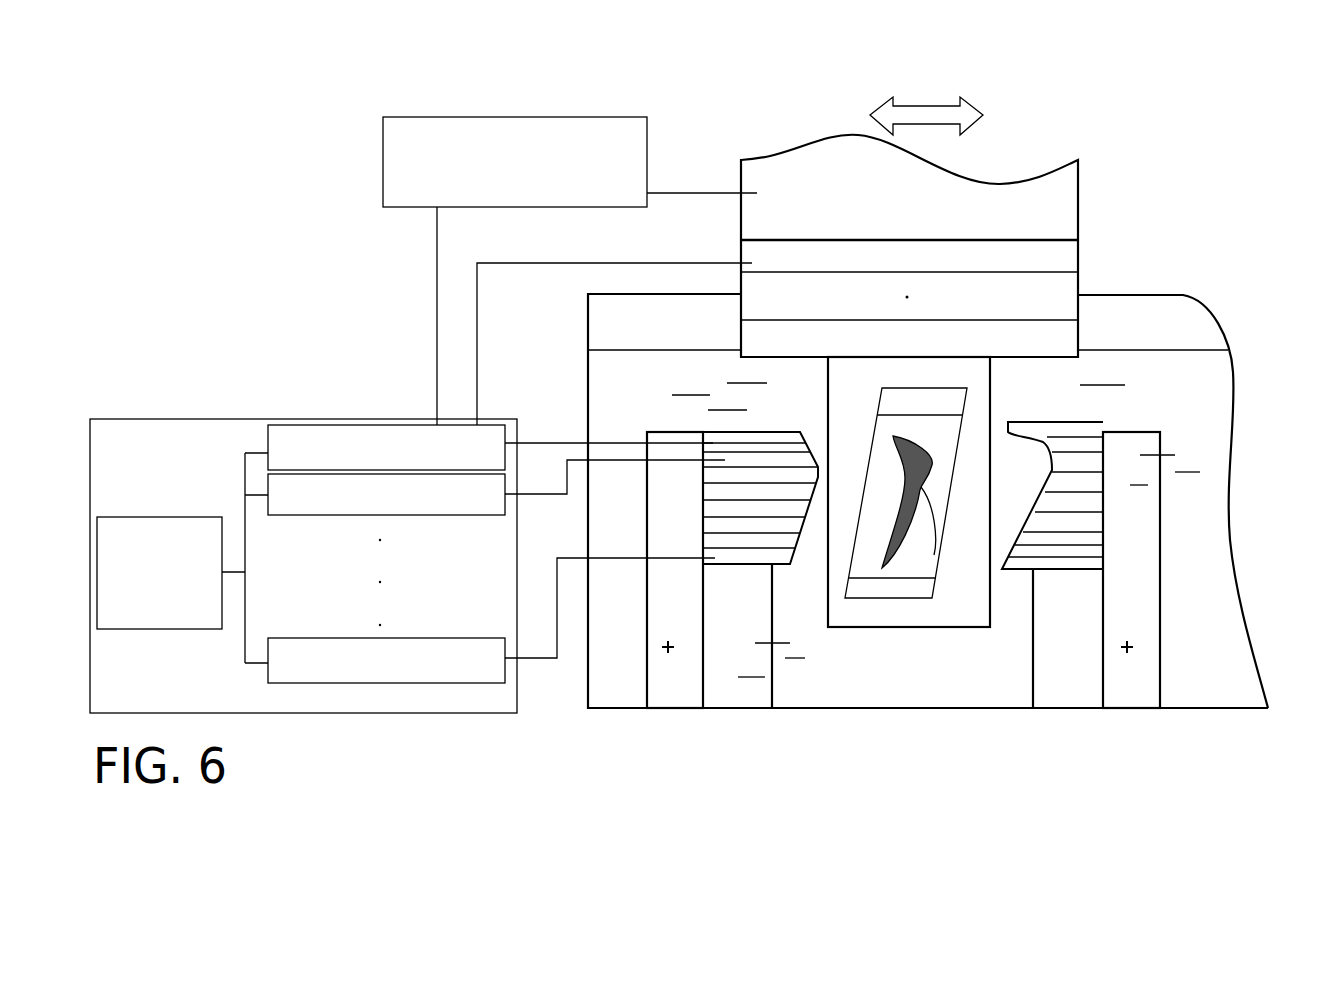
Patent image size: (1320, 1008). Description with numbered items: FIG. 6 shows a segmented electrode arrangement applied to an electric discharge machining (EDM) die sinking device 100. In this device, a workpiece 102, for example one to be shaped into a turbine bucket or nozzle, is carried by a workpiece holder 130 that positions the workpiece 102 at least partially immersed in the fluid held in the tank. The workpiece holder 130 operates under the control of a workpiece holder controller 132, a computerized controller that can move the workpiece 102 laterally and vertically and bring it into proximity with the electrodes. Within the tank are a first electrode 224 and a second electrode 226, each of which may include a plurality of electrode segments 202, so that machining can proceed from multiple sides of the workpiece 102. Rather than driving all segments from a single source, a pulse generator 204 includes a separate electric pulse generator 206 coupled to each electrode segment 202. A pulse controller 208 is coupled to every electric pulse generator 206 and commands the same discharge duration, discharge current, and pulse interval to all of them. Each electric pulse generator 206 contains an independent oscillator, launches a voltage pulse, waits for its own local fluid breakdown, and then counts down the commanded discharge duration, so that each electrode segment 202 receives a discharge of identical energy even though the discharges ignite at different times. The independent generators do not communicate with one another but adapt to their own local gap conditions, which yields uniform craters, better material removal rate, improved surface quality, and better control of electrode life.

The EDM die sinking device 100 is at (1094, 131).
The workpiece 102 is at (927, 492).
The workpiece holder 130 is at (1045, 203).
The workpiece holder controller 132 is at (570, 271).
The electrode segment 202 is at (777, 538).
The pulse generator 204 is at (214, 415).
The electric pulse generator 206 is at (313, 427).
The pulse controller 208 is at (159, 573).
The first electrode 224 is at (732, 577).
The second electrode 226 is at (1063, 579).